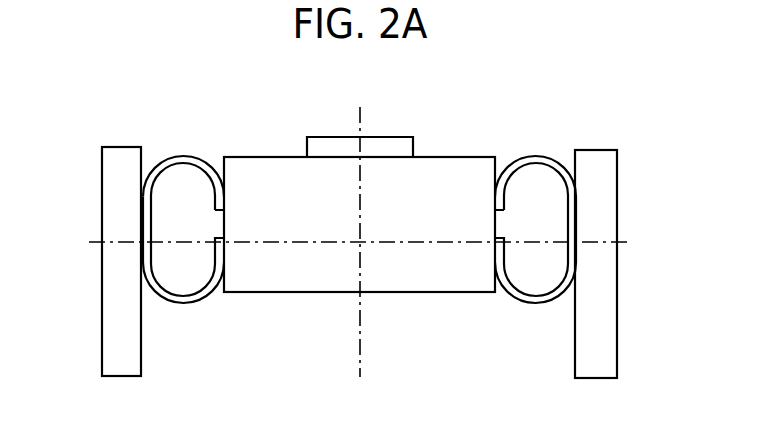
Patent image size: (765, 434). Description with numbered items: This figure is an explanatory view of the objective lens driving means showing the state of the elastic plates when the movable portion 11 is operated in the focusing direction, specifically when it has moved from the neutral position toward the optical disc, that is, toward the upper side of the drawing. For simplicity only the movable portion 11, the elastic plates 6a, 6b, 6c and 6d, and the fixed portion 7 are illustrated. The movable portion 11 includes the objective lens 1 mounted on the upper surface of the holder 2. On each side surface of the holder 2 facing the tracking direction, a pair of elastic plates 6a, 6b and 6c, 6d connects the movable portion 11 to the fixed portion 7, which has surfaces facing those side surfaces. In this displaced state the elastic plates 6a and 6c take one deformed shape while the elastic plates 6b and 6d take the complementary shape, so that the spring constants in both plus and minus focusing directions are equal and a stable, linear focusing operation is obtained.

The objective lens 1 is at (388, 137).
The holder 2 is at (448, 157).
The elastic plate 6a is at (180, 157).
The elastic plate 6b is at (183, 305).
The elastic plate 6c is at (538, 157).
The elastic plate 6d is at (533, 305).
The fixed portion 7 is at (102, 197).
The movable portion 11 is at (360, 218).